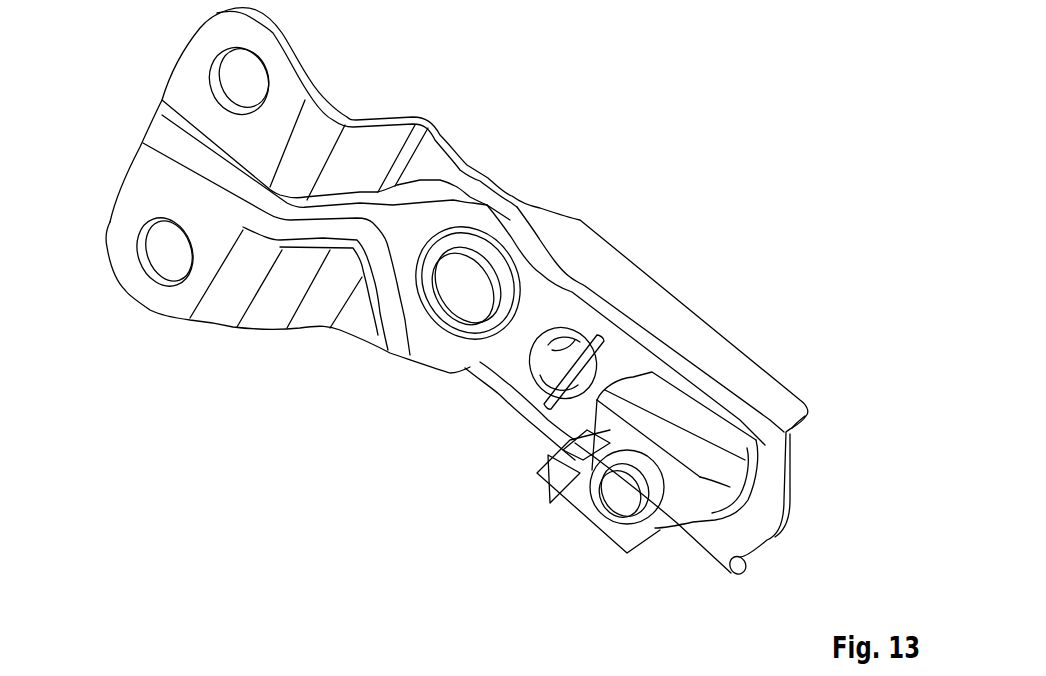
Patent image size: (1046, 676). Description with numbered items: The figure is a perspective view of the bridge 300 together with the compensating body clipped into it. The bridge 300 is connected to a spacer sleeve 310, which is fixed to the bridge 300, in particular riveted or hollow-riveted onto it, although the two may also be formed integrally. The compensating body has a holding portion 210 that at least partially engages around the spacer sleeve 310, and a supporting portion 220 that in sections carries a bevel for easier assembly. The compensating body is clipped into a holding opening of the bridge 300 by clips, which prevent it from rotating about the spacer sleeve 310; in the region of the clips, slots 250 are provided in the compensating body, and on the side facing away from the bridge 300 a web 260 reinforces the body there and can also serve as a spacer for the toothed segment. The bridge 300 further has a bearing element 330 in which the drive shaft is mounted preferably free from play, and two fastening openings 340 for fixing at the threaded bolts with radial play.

The bridge 300 is at (388, 148).
The fastening openings 340 is at (248, 78).
The bearing element 330 is at (437, 317).
The slots 250 is at (550, 372).
The web 260 is at (595, 343).
The supporting portion 220 is at (637, 380).
The holding portion 210 is at (715, 453).
The spacer sleeve 310 is at (627, 503).